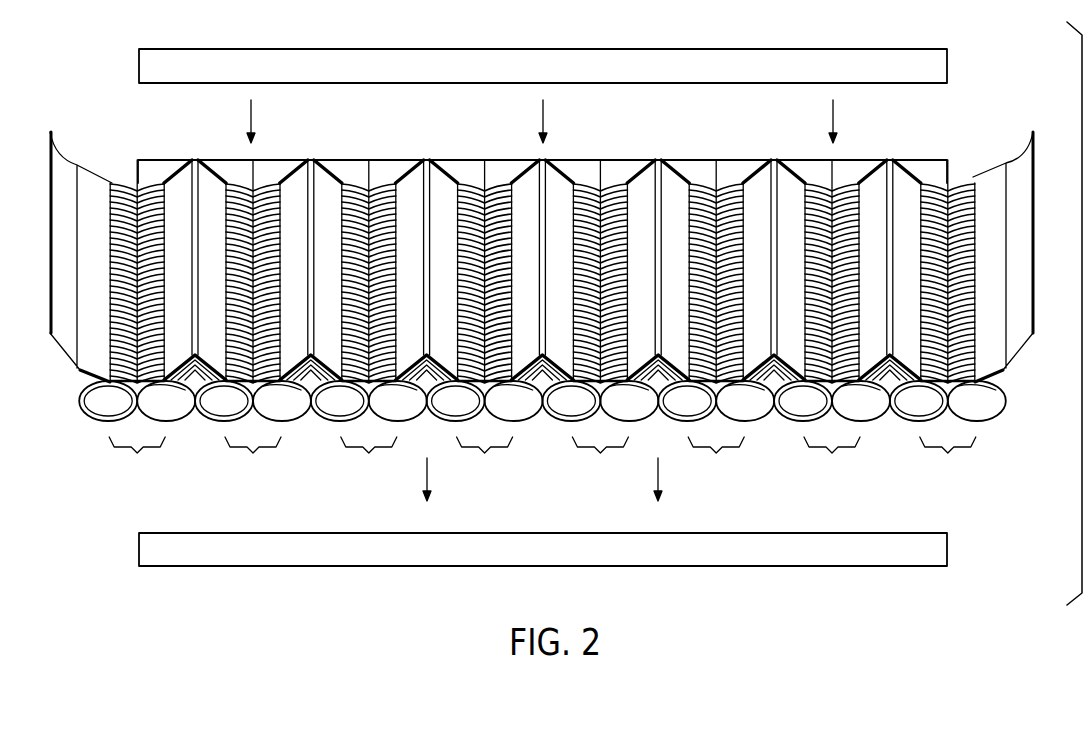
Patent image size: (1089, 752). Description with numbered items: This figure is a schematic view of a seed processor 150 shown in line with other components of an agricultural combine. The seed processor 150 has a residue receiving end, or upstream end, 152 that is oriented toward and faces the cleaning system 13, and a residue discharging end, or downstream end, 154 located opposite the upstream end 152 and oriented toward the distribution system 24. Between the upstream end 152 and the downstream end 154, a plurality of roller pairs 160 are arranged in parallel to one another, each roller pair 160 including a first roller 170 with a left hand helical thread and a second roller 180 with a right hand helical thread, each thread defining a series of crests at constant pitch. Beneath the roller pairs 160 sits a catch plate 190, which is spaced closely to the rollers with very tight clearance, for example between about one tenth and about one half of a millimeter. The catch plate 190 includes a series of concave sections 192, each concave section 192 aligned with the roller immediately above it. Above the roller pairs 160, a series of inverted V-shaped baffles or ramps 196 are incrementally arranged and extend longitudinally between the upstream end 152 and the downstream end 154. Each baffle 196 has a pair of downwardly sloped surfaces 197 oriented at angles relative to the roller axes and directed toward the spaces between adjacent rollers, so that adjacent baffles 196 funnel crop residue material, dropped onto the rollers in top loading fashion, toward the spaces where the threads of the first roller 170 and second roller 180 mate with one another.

The cleaning system 13 is at (139, 62).
The distribution system 24 is at (139, 545).
The seed processor 150 is at (977, 82).
The residue receiving end 152 is at (963, 133).
The residue discharging end 154 is at (1017, 420).
The roller pair 160 is at (542, 321).
The first roller 170 is at (209, 419).
The second roller 180 is at (298, 419).
The catch plate 190 is at (137, 168).
The concave section 192 is at (92, 419).
The baffle 196 is at (528, 193).
The downwardly sloped surface 197 is at (792, 195).